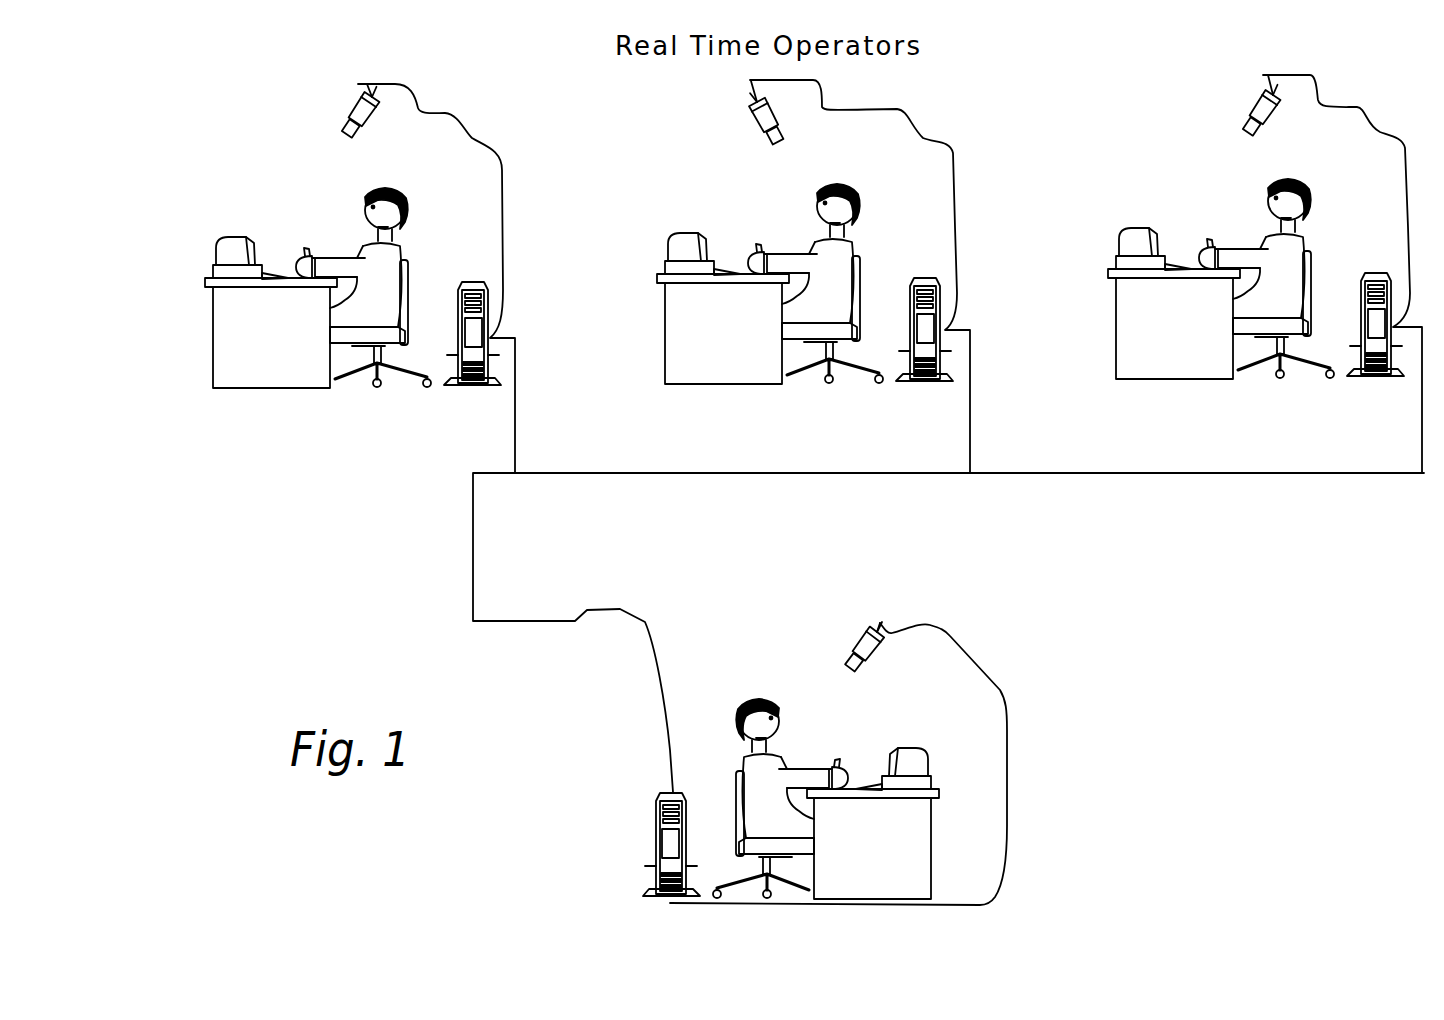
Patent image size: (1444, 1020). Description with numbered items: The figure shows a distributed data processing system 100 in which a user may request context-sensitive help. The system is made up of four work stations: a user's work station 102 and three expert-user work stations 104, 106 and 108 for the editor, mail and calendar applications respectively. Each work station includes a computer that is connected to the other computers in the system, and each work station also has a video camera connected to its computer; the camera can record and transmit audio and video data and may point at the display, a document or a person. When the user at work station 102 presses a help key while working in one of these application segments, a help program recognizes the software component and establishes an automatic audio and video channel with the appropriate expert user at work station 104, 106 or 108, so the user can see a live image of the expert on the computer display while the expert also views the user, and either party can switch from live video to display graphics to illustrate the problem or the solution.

The distributed data processing system 100 is at (1292, 534).
The work station 102 is at (1039, 770).
The work station 104 is at (201, 191).
The work station 106 is at (654, 186).
The work station 108 is at (1106, 182).